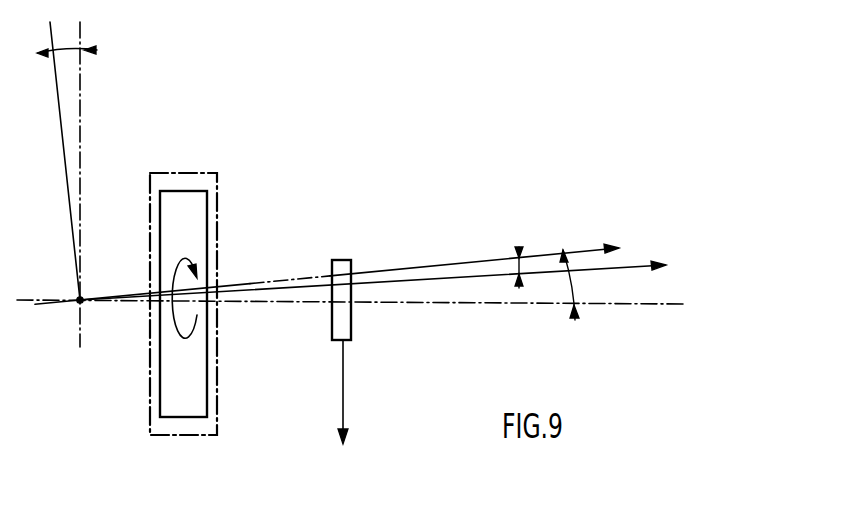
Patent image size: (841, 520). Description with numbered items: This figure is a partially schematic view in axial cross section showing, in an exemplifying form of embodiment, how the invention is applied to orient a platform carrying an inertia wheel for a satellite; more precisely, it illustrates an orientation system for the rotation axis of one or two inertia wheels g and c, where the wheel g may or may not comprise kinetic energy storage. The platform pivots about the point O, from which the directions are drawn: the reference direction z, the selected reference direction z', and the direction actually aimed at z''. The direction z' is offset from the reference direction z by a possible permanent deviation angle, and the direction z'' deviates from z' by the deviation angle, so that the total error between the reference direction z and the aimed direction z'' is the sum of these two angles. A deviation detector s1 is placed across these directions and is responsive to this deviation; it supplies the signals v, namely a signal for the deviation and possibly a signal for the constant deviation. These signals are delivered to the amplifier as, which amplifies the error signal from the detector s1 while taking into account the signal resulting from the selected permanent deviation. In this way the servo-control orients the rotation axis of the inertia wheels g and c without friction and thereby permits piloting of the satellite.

The point O is at (79, 302).
The reference direction OZ z is at (356, 304).
The selected reference direction OZ' z' is at (382, 278).
The direction actually aimed at OZ'' z'' is at (337, 271).
The inertia wheel g is at (208, 177).
The inertia wheel c is at (168, 397).
The deviation detector s1 is at (335, 260).
The amplifier as is at (345, 404).
The deviation signals v''ε and v''δ v is at (374, 391).